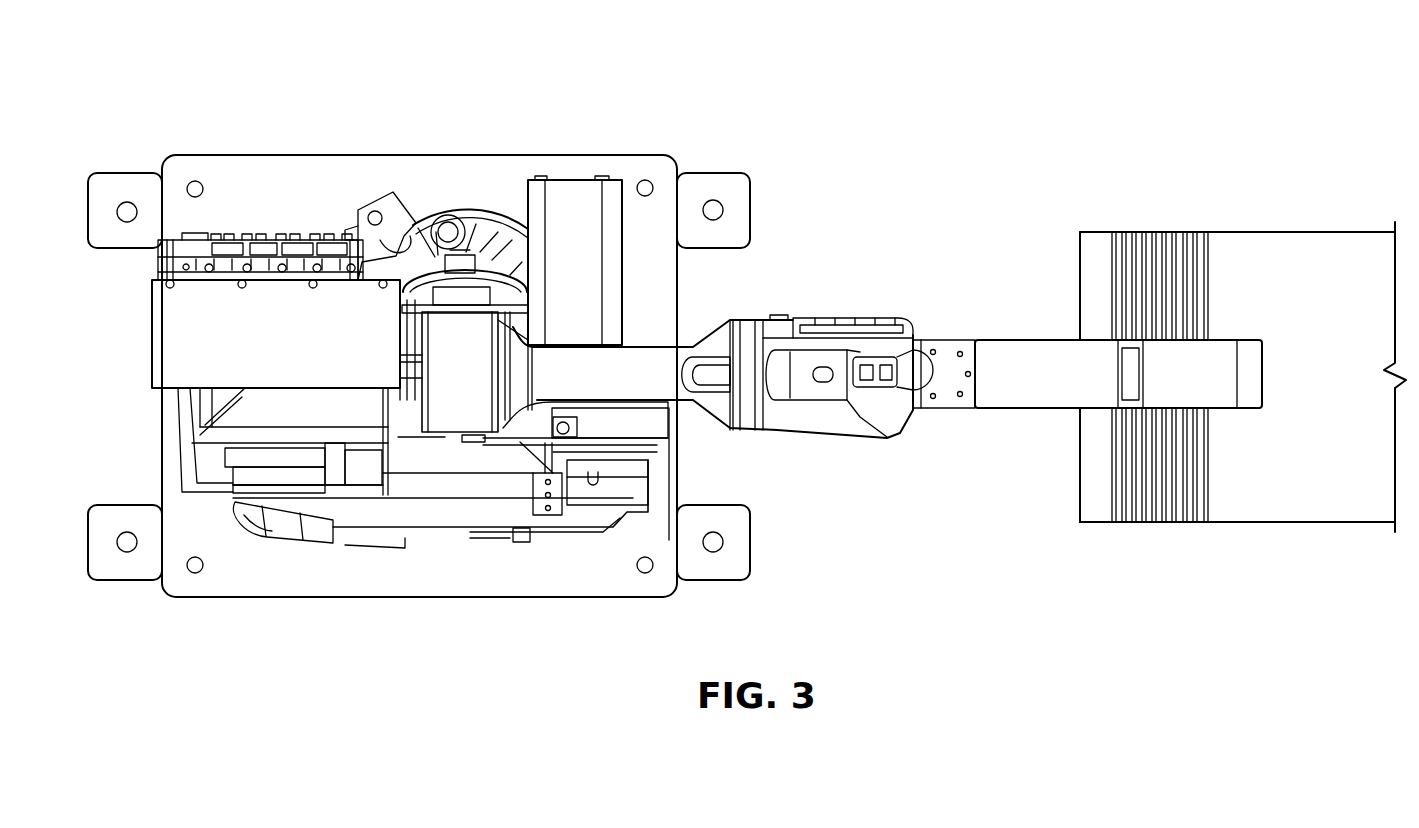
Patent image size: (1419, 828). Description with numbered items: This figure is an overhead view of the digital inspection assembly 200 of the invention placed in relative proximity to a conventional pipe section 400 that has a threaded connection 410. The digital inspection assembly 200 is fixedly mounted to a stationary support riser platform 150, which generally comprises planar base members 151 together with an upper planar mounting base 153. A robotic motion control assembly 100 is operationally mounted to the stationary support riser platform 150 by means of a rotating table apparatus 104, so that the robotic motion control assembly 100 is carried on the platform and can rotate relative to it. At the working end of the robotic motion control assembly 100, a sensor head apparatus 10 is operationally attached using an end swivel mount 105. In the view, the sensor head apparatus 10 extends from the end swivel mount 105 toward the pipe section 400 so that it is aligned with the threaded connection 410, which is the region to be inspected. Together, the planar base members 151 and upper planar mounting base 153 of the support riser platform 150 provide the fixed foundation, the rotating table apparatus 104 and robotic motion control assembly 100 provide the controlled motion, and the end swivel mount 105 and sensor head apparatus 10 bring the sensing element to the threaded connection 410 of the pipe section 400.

The sensor head apparatus 10 is at (1032, 388).
The robotic motion control assembly 100 is at (425, 550).
The rotating table apparatus 104 is at (498, 246).
The end swivel mount 105 is at (826, 316).
The support riser platform 150 is at (422, 360).
The planar base members 151 is at (700, 192).
The upper planar mounting base 153 is at (265, 182).
The digital inspection assembly 200 is at (744, 401).
The pipe section 400 is at (1250, 506).
The threaded connection 410 is at (1160, 267).